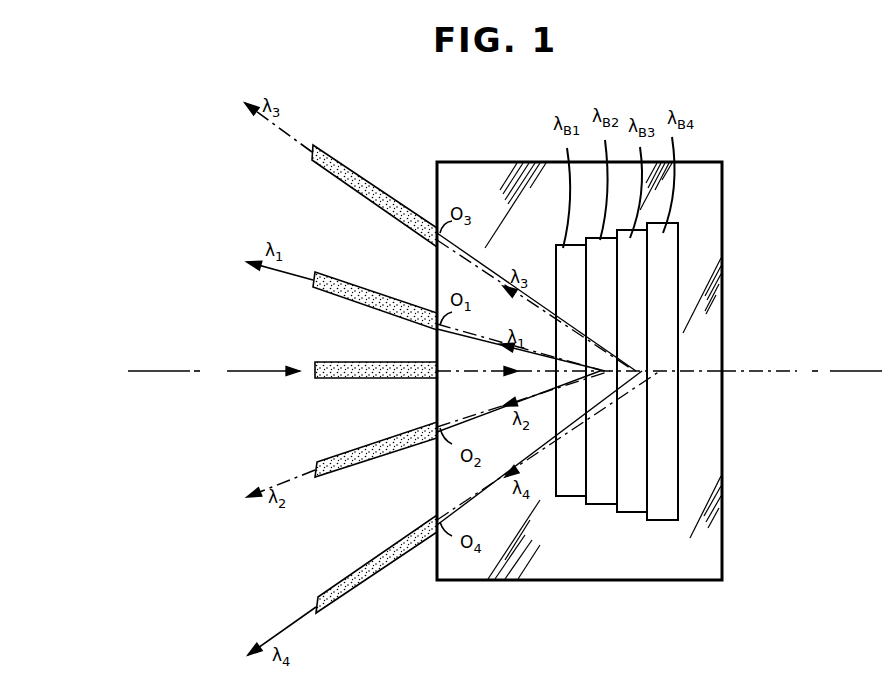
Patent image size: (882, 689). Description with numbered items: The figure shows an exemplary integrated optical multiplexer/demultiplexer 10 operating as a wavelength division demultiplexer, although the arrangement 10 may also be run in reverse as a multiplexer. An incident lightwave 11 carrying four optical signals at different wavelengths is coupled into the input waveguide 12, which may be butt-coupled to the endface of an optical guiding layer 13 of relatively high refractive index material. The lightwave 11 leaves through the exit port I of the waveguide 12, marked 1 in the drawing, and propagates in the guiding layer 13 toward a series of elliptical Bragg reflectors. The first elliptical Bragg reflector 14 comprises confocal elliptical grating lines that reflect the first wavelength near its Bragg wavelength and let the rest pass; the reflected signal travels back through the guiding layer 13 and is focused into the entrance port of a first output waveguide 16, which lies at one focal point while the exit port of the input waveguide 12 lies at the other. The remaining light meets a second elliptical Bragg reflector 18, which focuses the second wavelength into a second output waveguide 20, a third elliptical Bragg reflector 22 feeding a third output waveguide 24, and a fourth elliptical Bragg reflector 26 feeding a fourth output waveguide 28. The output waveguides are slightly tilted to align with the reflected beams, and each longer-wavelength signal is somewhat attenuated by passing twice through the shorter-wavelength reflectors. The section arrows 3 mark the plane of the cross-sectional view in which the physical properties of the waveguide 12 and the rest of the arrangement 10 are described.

The integrated optical multiplexer/demultiplexer 10 is at (482, 81).
The incident lightwave 11 is at (263, 390).
The input waveguide 12 is at (360, 379).
The optical guiding layer 13 is at (727, 552).
The first elliptical Bragg reflector 14 is at (572, 498).
The first output waveguide 16 is at (355, 291).
The second elliptical Bragg reflector 18 is at (602, 505).
The second output waveguide 20 is at (367, 460).
The third elliptical Bragg reflector 22 is at (633, 512).
The third output waveguide 24 is at (355, 173).
The fourth elliptical Bragg reflector 26 is at (665, 520).
The fourth output waveguide 28 is at (372, 585).
The input point on body face 1 is at (440, 370).
The section line of FIG. 3 is at (152, 360).